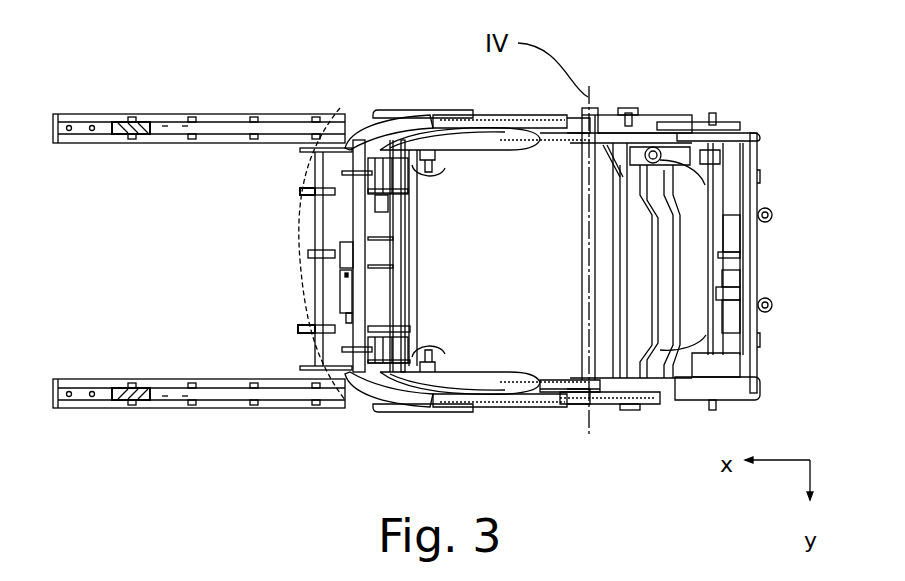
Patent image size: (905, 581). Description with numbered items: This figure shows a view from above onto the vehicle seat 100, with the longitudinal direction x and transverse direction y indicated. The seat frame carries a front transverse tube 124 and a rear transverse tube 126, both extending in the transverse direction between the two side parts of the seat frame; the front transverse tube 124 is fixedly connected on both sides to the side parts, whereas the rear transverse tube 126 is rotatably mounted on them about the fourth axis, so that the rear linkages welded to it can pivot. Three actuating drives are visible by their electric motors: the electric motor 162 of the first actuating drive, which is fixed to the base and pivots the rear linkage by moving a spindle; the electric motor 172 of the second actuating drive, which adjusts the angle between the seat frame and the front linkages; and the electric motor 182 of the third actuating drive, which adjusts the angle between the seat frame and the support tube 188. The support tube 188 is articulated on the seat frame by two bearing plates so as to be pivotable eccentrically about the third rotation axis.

The vehicle seat 100 is at (627, 83).
The front transverse tube 124 is at (398, 227).
The rear transverse tube 126 is at (585, 342).
The electric motor 162 is at (422, 168).
The electric motor 172 is at (345, 216).
The electric motor 182 is at (342, 282).
The support tube 188 is at (318, 168).